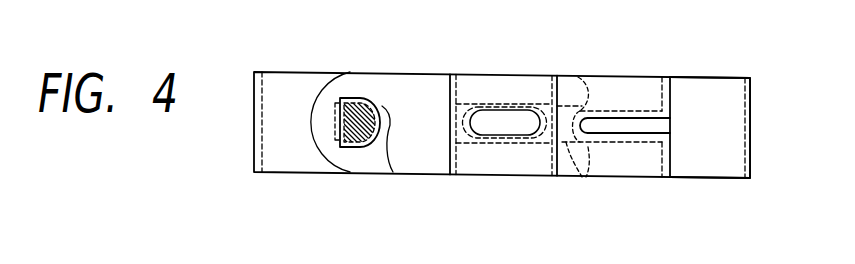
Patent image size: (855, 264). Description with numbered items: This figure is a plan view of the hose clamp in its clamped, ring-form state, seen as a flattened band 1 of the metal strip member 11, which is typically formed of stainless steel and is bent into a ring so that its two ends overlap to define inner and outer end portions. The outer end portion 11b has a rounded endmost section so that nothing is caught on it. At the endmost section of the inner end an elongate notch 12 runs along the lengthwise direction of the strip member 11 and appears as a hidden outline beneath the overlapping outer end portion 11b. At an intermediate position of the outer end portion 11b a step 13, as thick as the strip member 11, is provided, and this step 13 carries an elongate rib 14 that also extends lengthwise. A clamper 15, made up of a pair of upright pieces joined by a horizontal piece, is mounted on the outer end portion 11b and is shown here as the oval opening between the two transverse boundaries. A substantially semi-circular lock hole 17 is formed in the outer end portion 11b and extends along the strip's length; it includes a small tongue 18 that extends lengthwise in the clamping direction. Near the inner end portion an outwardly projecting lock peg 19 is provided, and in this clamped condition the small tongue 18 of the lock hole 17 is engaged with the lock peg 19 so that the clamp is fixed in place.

The lead frame strip 1 is at (477, 174).
The strip member 11 is at (712, 93).
The outer end portion 11b is at (427, 88).
The elongate notch 12 is at (576, 179).
The step 13 is at (630, 93).
The elongate rib 14 is at (622, 133).
The clamper 15 is at (537, 88).
The lock hole 17 is at (379, 98).
The small tongue 18 is at (358, 148).
The lock peg 19 is at (393, 172).